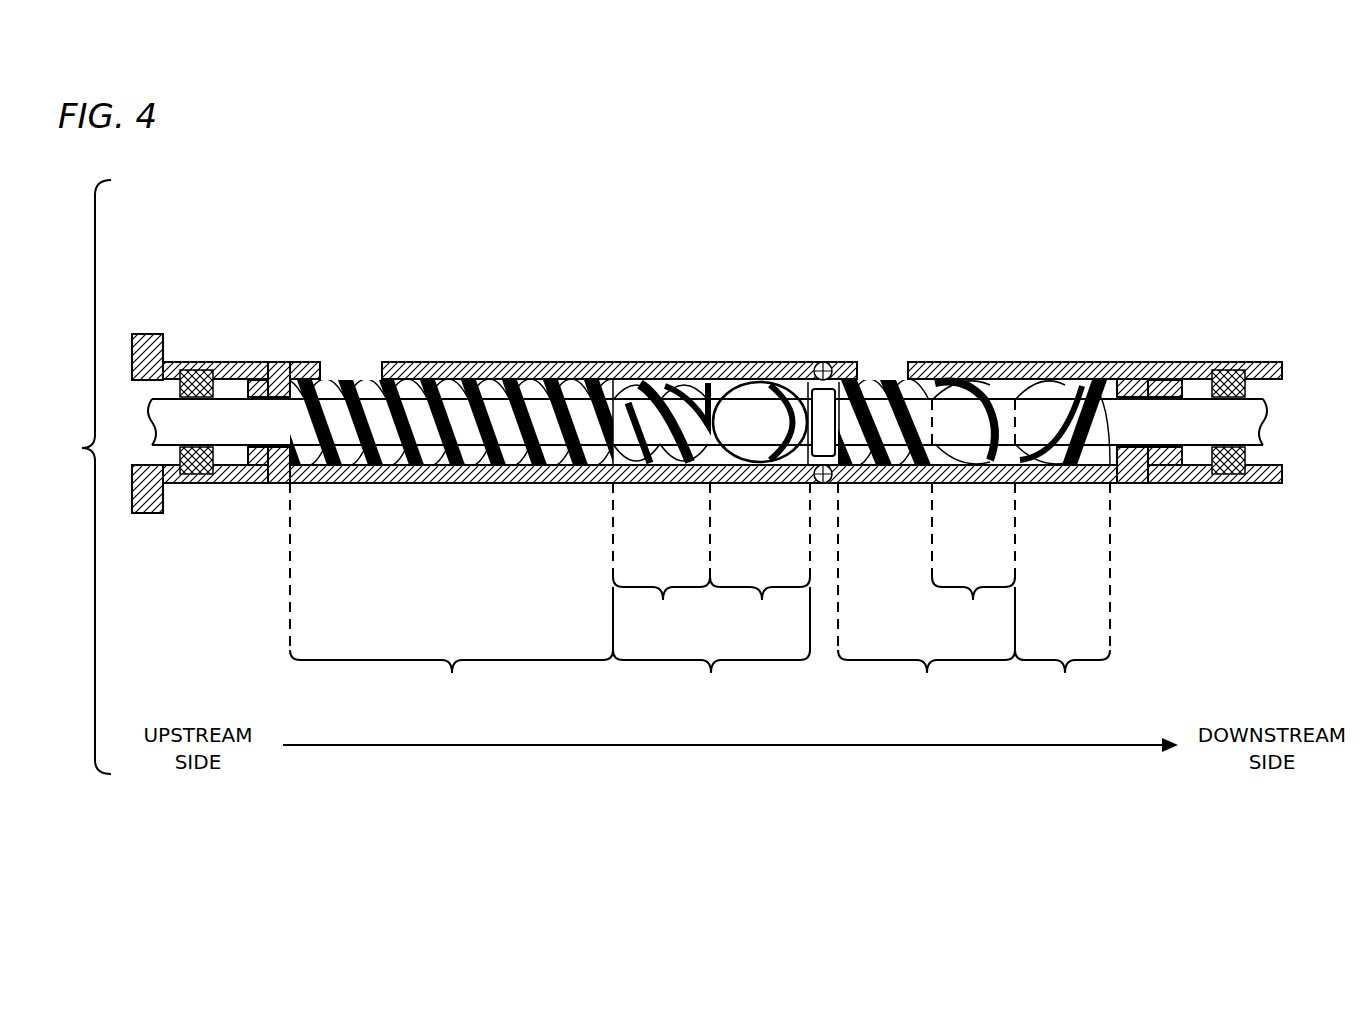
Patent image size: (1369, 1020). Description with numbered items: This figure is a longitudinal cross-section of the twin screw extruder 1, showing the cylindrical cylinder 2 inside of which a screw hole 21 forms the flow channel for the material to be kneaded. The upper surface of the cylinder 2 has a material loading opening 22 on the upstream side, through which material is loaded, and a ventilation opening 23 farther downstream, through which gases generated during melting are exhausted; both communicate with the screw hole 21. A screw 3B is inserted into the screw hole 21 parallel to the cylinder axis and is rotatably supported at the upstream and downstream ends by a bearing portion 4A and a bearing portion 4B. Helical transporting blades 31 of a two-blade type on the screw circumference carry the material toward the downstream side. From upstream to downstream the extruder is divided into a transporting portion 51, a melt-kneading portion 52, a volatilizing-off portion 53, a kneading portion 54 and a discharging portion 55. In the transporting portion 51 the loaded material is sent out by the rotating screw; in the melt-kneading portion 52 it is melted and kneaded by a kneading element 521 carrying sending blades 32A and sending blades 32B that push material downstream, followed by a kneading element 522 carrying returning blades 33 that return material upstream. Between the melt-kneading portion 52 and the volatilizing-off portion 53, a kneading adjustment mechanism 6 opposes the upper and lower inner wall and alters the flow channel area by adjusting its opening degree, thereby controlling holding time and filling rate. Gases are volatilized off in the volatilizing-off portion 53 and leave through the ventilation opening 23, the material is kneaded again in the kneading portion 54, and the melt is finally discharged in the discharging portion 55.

The twin screw extruder 1 is at (1190, 212).
The cylinder 2 is at (280, 362).
The screw hole 21 is at (960, 362).
The material loading opening 22 is at (352, 360).
The ventilation opening 23 is at (880, 358).
The screw 3B is at (1050, 362).
The bearing portion 4A is at (191, 362).
The bearing portion 4B is at (1228, 362).
The transporting blades 31 is at (520, 362).
The sending blades 32A is at (630, 362).
The sending blades 32B is at (708, 362).
The returning blades 33 is at (783, 362).
The kneading adjustment mechanism 6 is at (822, 362).
The transporting portion 51 is at (451, 595).
The melt-kneading portion 52 is at (711, 595).
The kneading element 521 is at (661, 561).
The kneading element 522 is at (760, 608).
The volatilizing-off portion 53 is at (926, 595).
The kneading portion 54 is at (973, 519).
The discharging portion 55 is at (1062, 595).